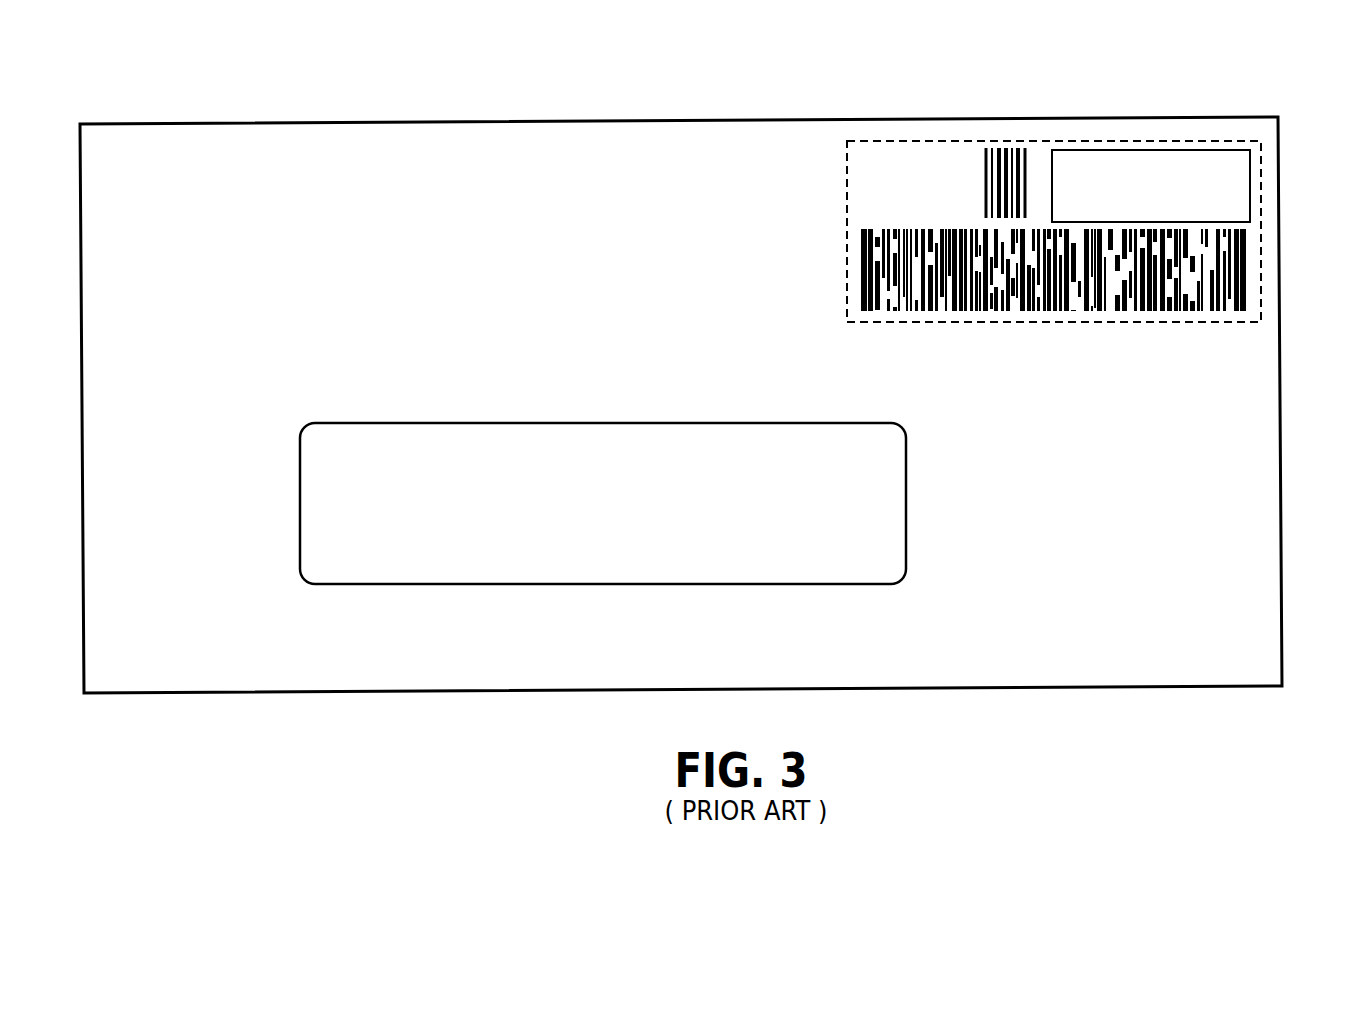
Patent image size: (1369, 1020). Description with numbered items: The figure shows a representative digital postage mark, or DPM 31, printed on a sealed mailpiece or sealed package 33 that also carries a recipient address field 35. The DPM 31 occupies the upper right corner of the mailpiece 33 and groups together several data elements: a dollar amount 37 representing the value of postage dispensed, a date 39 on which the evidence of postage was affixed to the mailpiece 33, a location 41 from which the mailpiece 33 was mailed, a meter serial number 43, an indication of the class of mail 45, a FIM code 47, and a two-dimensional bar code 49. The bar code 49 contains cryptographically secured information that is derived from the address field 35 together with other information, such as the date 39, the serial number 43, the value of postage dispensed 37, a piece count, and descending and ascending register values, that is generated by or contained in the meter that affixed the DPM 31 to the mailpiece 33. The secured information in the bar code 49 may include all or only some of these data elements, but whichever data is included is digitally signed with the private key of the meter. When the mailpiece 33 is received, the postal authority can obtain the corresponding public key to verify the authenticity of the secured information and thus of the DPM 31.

The digital postage mark 31 is at (1083, 322).
The sealed mailpiece 33 is at (578, 121).
The recipient address field 35 is at (563, 421).
The dollar amount 37 is at (1215, 157).
The date 39 is at (1057, 178).
The location 41 is at (1227, 196).
The meter serial number 43 is at (1229, 209).
The class of mail 45 is at (878, 158).
The FIM code 47 is at (1000, 150).
The 2D bar code 49 is at (1244, 270).